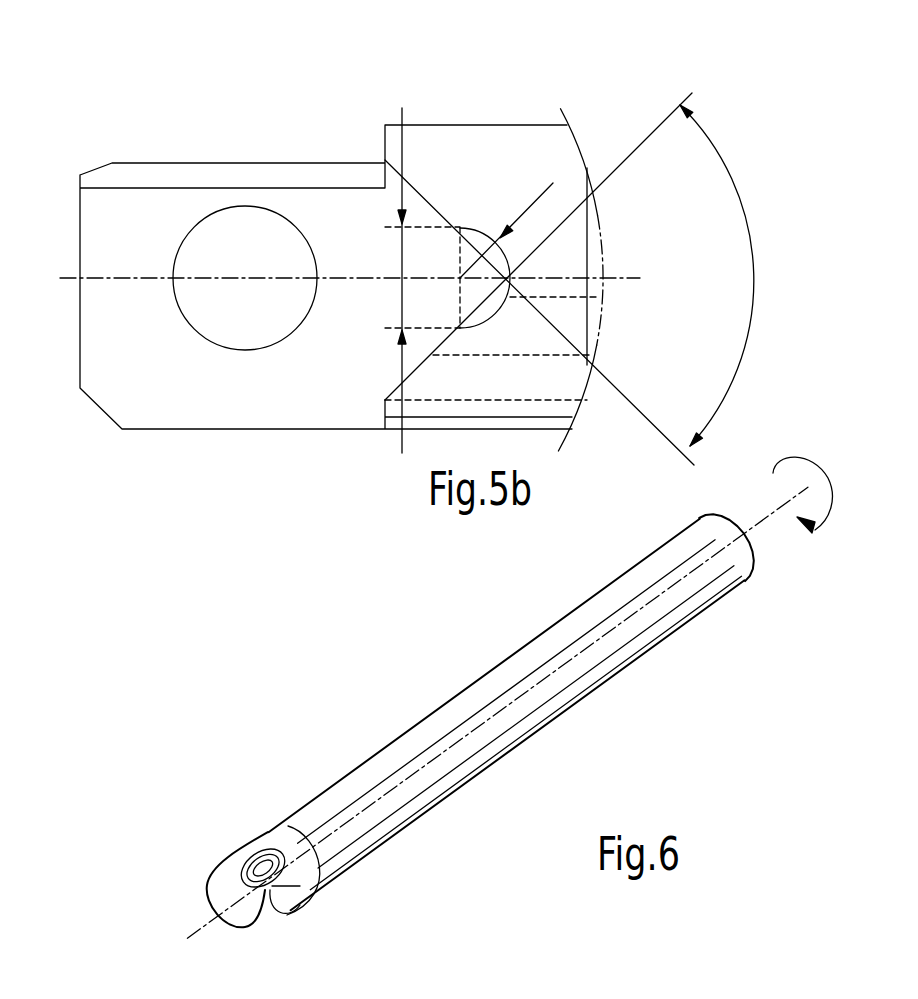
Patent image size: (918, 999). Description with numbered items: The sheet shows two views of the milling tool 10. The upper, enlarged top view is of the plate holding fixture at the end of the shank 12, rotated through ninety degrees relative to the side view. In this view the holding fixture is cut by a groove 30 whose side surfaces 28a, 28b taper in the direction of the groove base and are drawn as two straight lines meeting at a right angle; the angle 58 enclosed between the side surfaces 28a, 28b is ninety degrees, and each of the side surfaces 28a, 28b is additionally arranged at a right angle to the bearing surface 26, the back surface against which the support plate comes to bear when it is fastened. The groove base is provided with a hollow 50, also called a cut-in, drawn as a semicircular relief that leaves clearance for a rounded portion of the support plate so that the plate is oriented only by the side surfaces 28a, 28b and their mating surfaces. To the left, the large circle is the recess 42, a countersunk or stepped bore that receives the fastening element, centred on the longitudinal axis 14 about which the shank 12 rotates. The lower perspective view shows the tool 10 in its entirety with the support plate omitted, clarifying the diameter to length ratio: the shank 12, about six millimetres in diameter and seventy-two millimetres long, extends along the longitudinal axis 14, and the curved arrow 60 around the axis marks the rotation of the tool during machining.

In FIG. 6, the tool 10 is at (328, 753).
In FIG. 6, the shank 12 is at (468, 768).
In FIG. 5B, the longitudinal axis 14 is at (162, 278).
In FIG. 6, the longitudinal axis 14 is at (582, 647).
In FIG. 5B, the bearing surface 26 is at (352, 385).
In FIG. 5B, the first side surface 28a is at (418, 368).
In FIG. 5B, the second side surface 28b is at (430, 204).
In FIG. 5B, the groove 30 is at (448, 337).
In FIG. 5B, the recess 42 is at (285, 340).
In FIG. 5B, the hollow 50 is at (474, 228).
In FIG. 5B, the angle 58 is at (752, 267).
In FIG. 6, the direction of rotation 60 is at (830, 508).